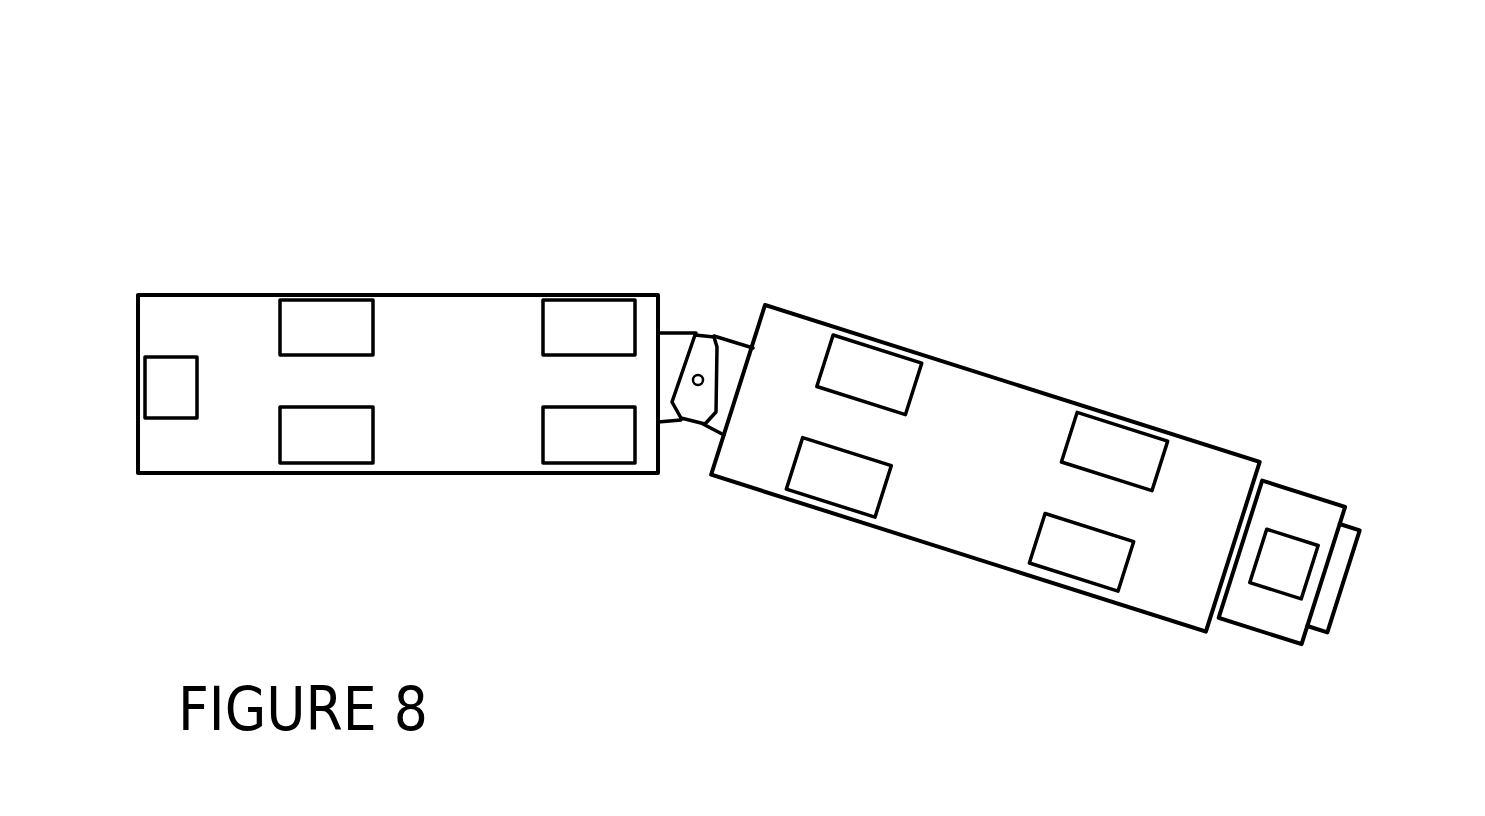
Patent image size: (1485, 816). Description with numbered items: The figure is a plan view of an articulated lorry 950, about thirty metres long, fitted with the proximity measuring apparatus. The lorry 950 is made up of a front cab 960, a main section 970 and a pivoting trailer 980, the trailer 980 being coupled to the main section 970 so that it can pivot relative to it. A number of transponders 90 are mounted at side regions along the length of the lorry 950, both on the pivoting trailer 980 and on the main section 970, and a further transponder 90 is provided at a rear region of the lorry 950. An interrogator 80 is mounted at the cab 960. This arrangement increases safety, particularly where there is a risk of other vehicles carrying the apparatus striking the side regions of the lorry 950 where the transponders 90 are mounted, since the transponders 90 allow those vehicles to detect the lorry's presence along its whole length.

The articulated lorry 950 is at (557, 120).
The pivoting trailer 980 is at (455, 295).
The main section 970 is at (1210, 440).
The front cab 960 is at (1312, 497).
The transponder 90 is at (163, 370).
The interrogator 80 is at (1288, 588).